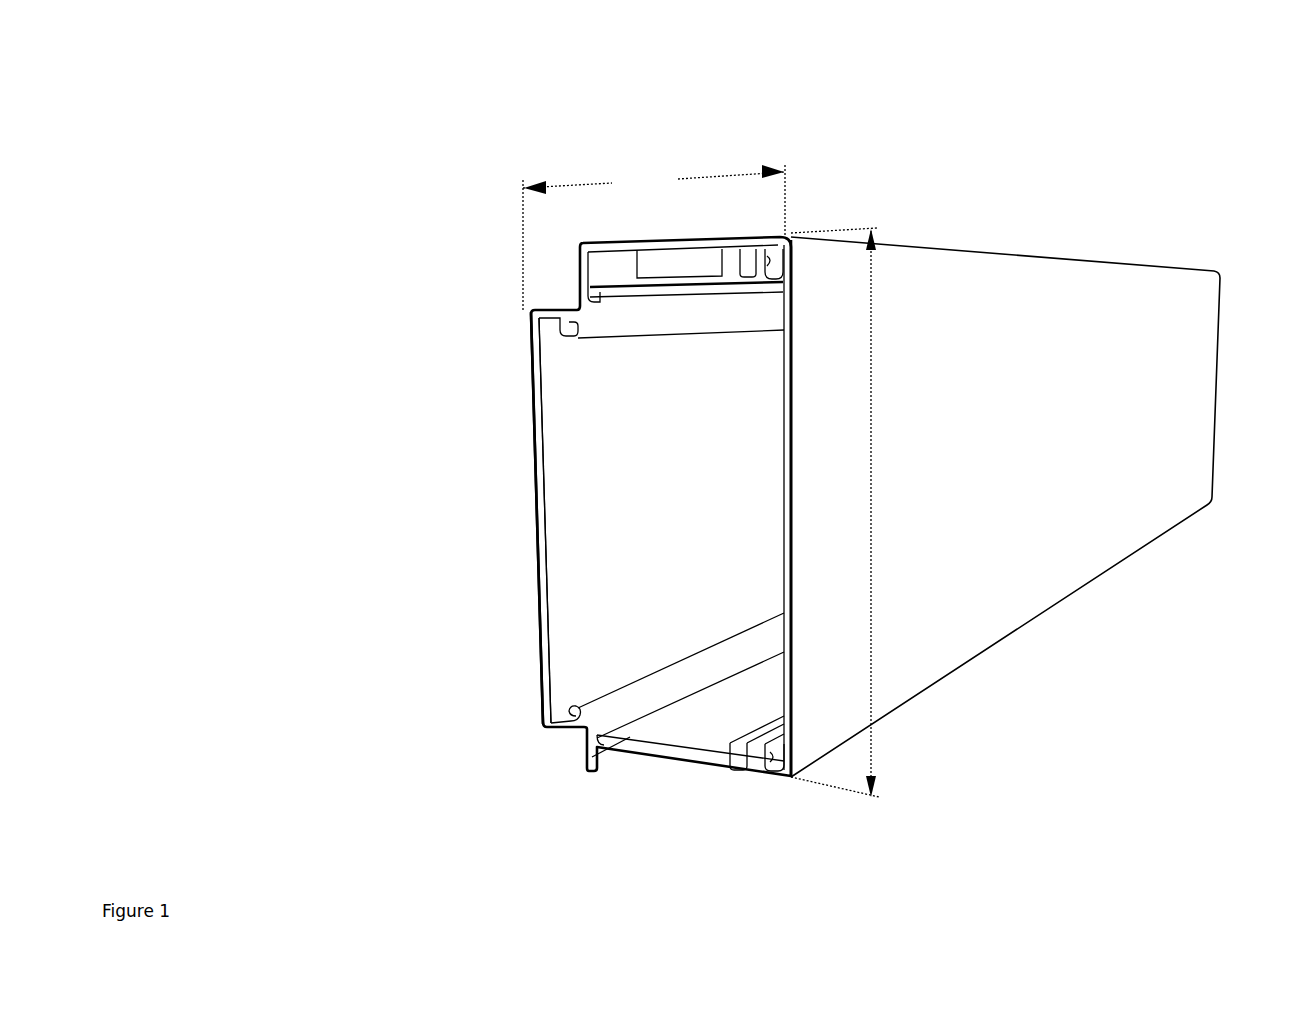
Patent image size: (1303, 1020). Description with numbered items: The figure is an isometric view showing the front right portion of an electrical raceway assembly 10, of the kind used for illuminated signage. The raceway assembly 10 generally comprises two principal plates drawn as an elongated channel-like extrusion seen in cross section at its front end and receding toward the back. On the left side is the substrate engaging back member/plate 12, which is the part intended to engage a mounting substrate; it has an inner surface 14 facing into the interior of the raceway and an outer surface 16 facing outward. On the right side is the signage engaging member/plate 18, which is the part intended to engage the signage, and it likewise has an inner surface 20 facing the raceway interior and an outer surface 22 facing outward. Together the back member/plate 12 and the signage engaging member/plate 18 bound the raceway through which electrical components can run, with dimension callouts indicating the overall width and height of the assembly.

The raceway assembly 10 is at (1138, 146).
The substrate engaging back member/plate 12 is at (530, 670).
The inner surface 14 is at (551, 507).
The outer surface 16 is at (533, 473).
The signage engaging member/plate 18 is at (805, 702).
The inner surface 20 is at (784, 459).
The outer surface 22 is at (791, 494).